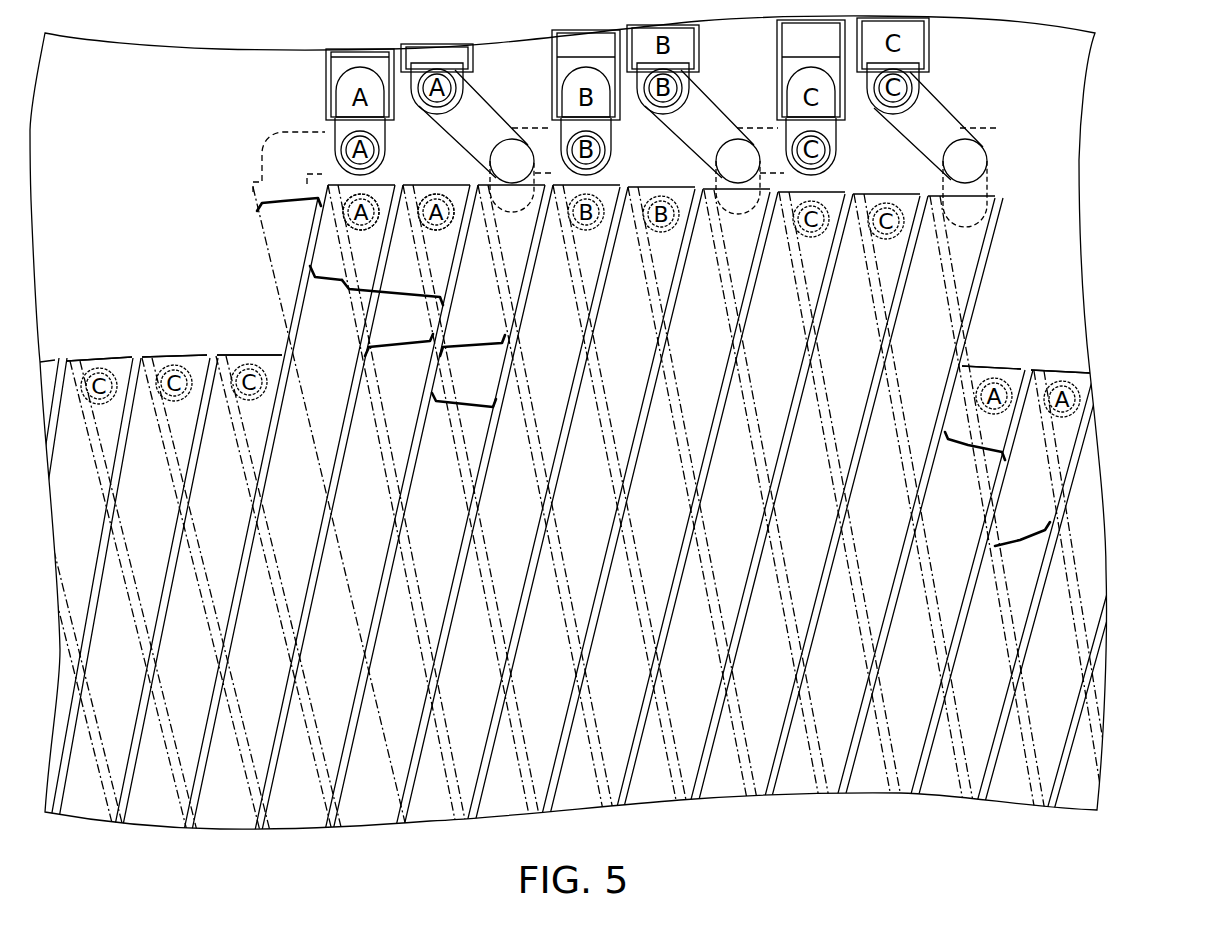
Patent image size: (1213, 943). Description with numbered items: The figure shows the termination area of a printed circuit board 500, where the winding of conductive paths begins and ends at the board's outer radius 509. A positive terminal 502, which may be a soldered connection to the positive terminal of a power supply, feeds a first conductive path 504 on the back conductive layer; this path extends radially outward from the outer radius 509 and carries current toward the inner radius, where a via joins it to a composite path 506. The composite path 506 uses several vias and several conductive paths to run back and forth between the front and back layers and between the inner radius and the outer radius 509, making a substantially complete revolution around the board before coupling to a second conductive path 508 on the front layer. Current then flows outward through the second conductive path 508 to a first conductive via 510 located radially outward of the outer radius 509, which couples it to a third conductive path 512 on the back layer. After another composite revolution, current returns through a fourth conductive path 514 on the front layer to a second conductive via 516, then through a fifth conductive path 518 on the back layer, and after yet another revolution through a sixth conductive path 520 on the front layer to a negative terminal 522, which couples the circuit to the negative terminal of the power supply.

The printed circuit board 500 is at (146, 151).
The positive terminal 502 is at (302, 146).
The first conductive path 504 is at (283, 201).
The composite path 506 is at (1040, 530).
The second conductive path 508 is at (333, 278).
The outer radius 509 is at (146, 345).
The first conductive via 510 is at (368, 210).
The third conductive path 512 is at (390, 345).
The fourth conductive path 514 is at (418, 292).
The second conductive via 516 is at (433, 212).
The fifth conductive path 518 is at (472, 345).
The sixth conductive path 520 is at (480, 400).
The negative terminal 522 is at (480, 118).